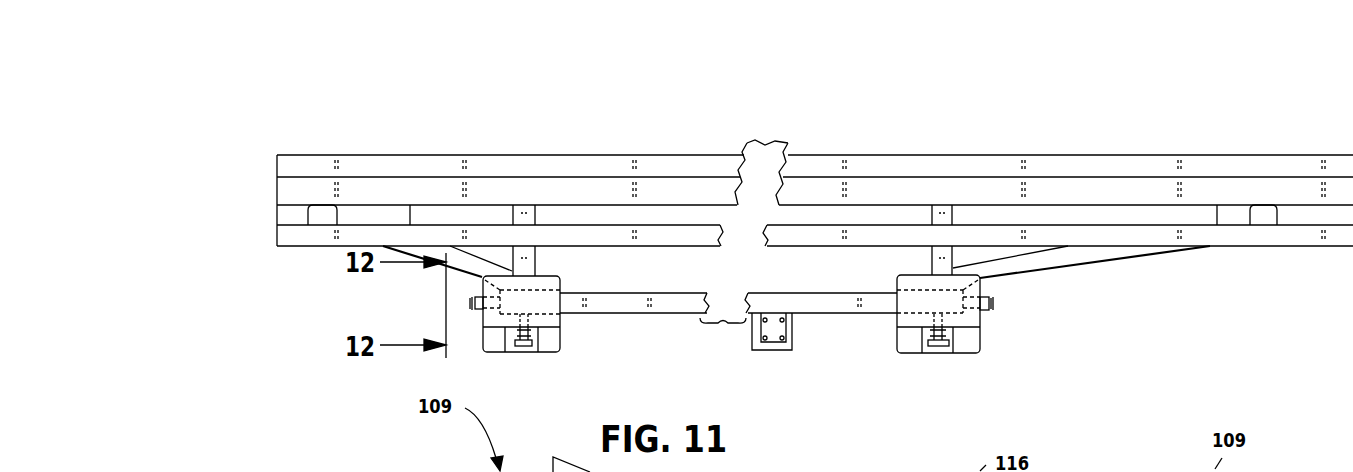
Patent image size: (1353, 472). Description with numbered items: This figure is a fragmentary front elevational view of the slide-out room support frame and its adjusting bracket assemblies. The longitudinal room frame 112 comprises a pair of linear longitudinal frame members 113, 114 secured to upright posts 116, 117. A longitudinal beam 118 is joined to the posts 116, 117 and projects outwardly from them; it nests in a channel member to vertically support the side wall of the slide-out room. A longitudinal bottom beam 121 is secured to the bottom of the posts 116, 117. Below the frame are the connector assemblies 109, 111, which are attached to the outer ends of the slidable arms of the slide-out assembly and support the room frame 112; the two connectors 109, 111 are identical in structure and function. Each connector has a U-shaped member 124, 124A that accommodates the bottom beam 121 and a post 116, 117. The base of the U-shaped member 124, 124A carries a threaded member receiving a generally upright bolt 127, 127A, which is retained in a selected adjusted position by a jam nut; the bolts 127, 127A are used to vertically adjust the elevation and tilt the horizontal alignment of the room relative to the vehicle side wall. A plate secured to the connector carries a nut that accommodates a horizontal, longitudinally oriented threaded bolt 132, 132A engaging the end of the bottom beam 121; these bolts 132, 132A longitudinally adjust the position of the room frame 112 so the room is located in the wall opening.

The room frame 112 is at (1052, 145).
The longitudinal frame member 113 is at (290, 164).
The longitudinal beam 118 is at (290, 187).
The longitudinal frame member 114 is at (283, 242).
The upright post 116 is at (526, 208).
The upright post 117 is at (936, 208).
The bottom beam 121 is at (663, 309).
The second U-shaped member 124 is at (547, 303).
The U-shaped member 124A is at (970, 320).
The bolt 127 is at (525, 350).
The bolt 127A is at (934, 352).
The threaded bolt 132 is at (472, 308).
The bolt 132A is at (993, 303).
The connector assembly 109 is at (418, 374).
The connector assembly 111 is at (982, 370).